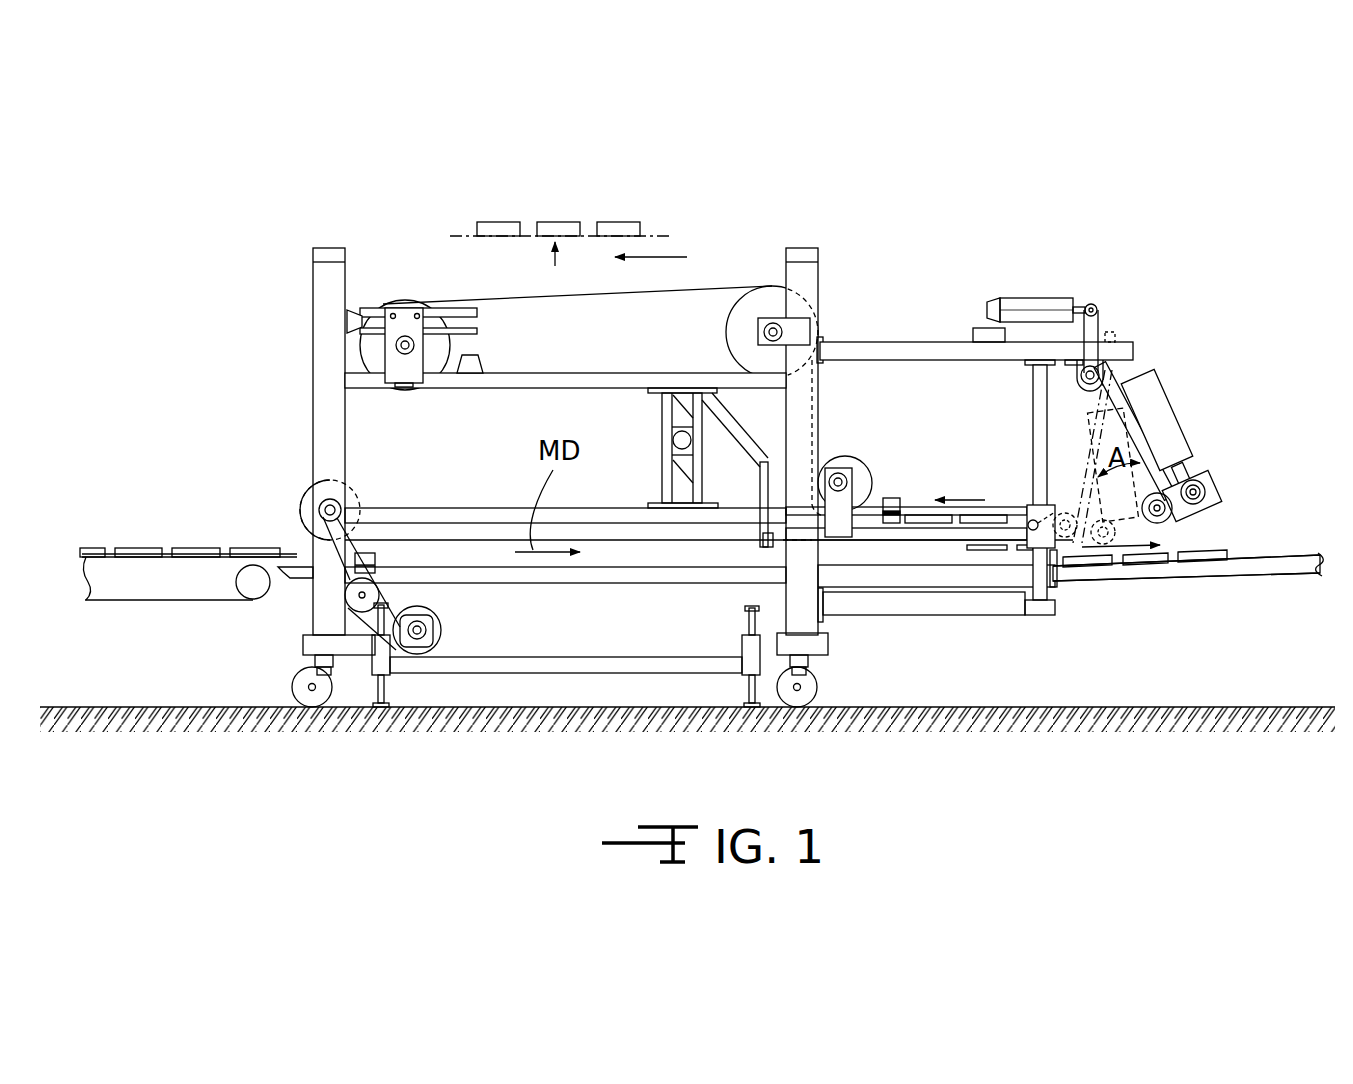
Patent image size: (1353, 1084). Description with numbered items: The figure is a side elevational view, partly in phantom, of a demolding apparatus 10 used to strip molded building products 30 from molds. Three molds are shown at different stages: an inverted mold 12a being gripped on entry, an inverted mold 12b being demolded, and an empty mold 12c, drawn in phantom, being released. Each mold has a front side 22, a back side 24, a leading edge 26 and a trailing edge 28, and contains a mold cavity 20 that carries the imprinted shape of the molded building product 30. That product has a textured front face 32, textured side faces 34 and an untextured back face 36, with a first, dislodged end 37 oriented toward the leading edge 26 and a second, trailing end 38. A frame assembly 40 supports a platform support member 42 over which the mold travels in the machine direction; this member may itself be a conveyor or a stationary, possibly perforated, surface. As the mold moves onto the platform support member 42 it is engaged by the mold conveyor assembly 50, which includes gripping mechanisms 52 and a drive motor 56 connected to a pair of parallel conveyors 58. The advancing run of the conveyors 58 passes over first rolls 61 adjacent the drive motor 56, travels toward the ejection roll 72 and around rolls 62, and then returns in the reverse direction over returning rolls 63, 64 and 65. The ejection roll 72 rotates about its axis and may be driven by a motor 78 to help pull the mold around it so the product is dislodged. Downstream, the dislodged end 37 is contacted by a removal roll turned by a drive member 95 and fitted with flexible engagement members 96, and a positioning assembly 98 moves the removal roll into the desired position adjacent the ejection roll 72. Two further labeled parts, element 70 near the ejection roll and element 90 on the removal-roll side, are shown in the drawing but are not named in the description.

The demolding apparatus 10 is at (172, 232).
The inverted mold 12a is at (185, 517).
The inverted mold 12b is at (950, 505).
The empty mold 12c is at (555, 220).
The mold cavity 20 is at (920, 513).
The front side 22 is at (1010, 505).
The back side 24 is at (242, 553).
The leading edge 26 is at (450, 302).
The trailing edge 28 is at (697, 287).
The molded building product 30 is at (1218, 545).
The textured front face 32 is at (1213, 550).
The textured side faces 34 is at (1217, 572).
The untextured back face 36 is at (1203, 570).
The dislodged end 37 is at (1230, 558).
The trailing end 38 is at (1188, 553).
The frame assembly 40 is at (312, 318).
The platform support member 42 is at (513, 583).
The mold conveyor assembly 50 is at (305, 480).
The gripping mechanism 52 is at (363, 555).
The drive motor 56 is at (398, 660).
The conveyors 58 is at (740, 288).
The first rolls 61 is at (345, 520).
The rolls 62 is at (1017, 543).
The returning roll 63 is at (828, 460).
The returning roll 64 is at (732, 337).
The returning roll 65 is at (387, 307).
The transfer device 70 is at (1026, 500).
The ejection roll 72 is at (1047, 567).
The motor 78 is at (1050, 527).
The pivot arm 90 is at (1123, 336).
The drive member 95 is at (1157, 407).
The flexible engagement members 96 is at (1158, 530).
The positioning assembly 98 is at (1032, 296).